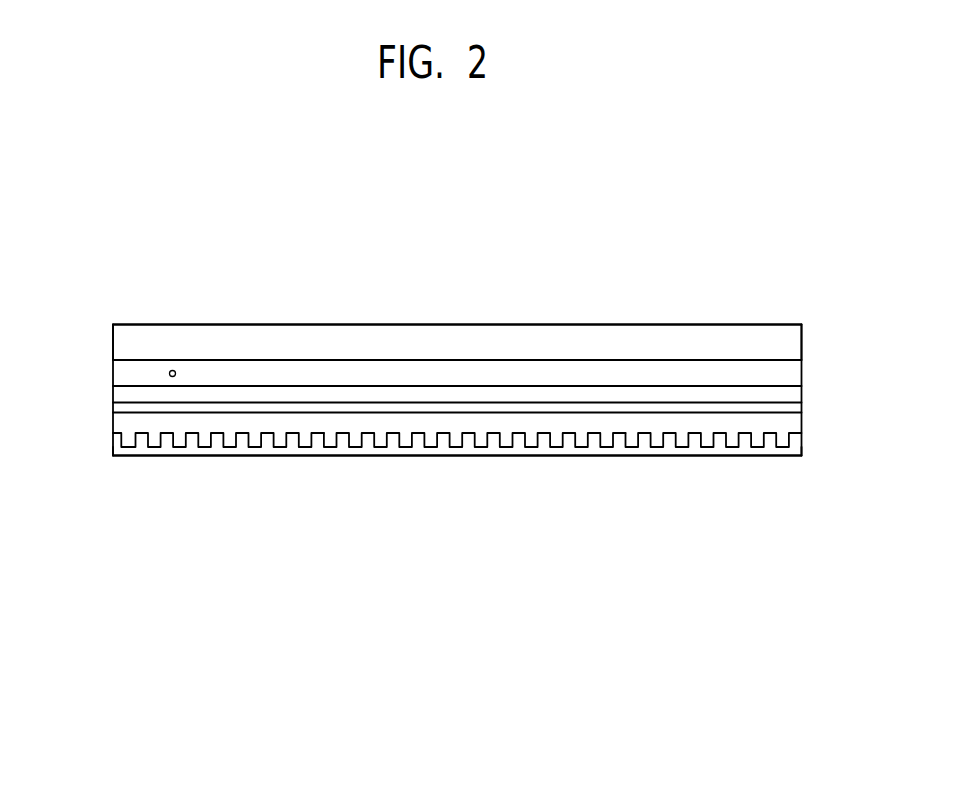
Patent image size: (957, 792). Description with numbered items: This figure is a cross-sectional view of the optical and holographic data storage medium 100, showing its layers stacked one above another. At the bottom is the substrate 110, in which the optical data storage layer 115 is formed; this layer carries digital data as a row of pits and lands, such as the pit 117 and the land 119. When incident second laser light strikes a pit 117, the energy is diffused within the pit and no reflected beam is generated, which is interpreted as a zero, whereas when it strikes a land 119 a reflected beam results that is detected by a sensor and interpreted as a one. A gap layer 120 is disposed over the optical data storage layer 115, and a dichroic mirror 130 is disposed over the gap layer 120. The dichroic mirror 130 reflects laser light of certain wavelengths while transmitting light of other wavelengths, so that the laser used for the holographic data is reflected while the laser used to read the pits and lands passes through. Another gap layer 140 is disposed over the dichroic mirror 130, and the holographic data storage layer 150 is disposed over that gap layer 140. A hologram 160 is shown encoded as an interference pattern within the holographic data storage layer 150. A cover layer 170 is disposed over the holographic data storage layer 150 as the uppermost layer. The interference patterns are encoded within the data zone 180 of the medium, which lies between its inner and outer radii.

The optical holographic data storage medium 100 is at (453, 553).
The substrate 110 is at (118, 450).
The optical data storage layer 115 is at (188, 437).
The pit 117 is at (331, 446).
The land 119 is at (668, 436).
The gap layer 120 is at (798, 418).
The dichroic mirror 130 is at (126, 405).
The gap layer 140 is at (798, 390).
The holographic data storage layer 150 is at (126, 375).
The hologram 160 is at (172, 370).
The cover layer 170 is at (760, 340).
The data zone 180 is at (595, 325).